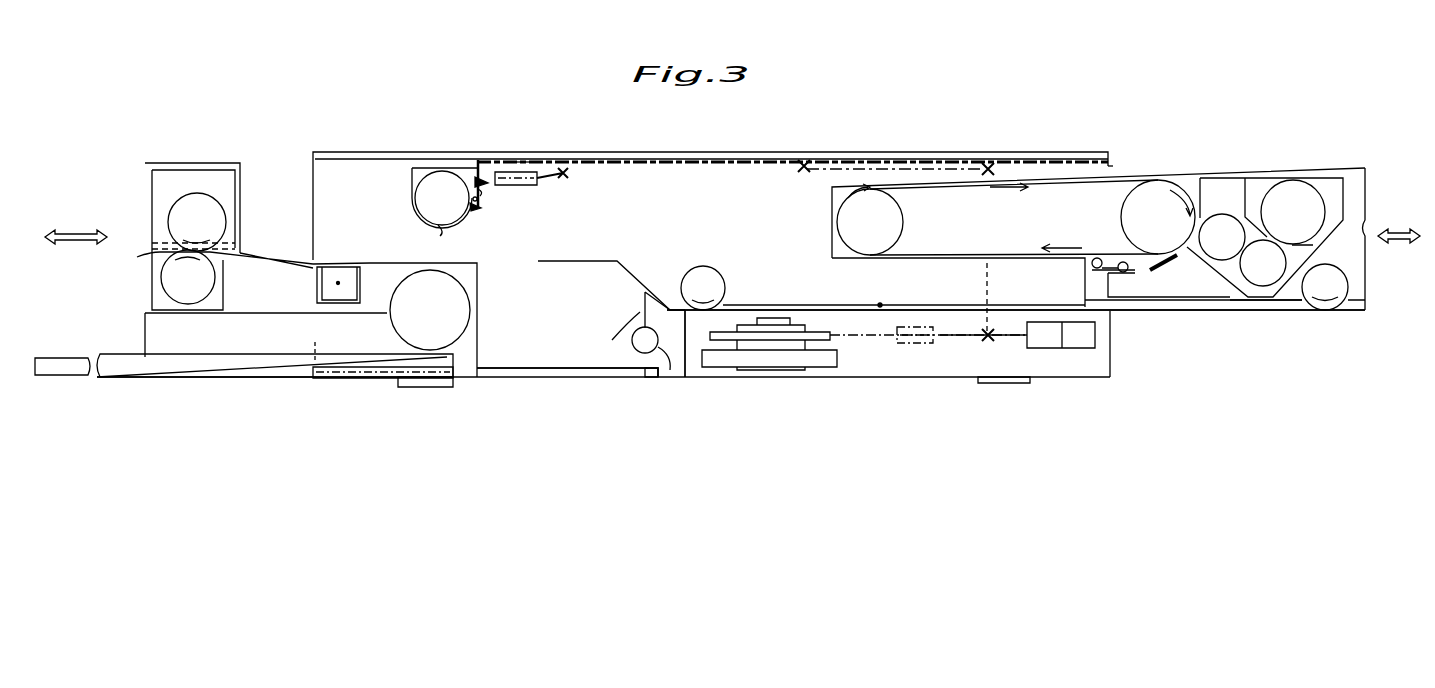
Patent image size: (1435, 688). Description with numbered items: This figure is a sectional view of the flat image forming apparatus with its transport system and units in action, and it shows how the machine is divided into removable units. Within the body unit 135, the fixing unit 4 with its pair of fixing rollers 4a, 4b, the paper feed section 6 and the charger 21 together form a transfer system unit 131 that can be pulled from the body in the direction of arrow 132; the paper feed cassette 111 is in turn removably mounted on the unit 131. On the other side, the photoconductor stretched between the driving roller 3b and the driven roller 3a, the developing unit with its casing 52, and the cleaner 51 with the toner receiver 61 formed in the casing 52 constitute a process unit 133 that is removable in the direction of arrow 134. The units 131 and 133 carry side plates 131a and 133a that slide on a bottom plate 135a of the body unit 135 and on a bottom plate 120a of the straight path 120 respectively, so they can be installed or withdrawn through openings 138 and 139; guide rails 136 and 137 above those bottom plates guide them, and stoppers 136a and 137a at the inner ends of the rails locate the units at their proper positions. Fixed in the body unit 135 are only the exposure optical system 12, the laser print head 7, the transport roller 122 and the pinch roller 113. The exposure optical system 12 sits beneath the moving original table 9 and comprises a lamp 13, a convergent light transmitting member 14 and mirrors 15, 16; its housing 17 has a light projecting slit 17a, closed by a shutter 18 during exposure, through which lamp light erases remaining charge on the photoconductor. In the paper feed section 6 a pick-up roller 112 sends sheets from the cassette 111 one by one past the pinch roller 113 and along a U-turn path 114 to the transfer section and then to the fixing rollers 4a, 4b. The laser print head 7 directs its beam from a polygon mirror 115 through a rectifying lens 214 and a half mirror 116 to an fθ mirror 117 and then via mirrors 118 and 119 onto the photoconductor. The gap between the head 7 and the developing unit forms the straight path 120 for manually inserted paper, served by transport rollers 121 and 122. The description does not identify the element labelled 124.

The driven roller 3a is at (893, 258).
The driving roller 3b is at (1153, 195).
The fixing unit 4 is at (234, 243).
The fixing roller 4a is at (215, 223).
The fixing roller 4b is at (203, 278).
The paper feed section 6 is at (372, 340).
The laser print head 7 is at (855, 377).
The original table 9 is at (857, 150).
The exposure optical system 12 is at (508, 170).
The lamp 13 is at (415, 180).
The convergent light transmitting member 14 is at (522, 172).
The mirror 15 is at (470, 158).
The mirror 16 is at (573, 162).
The housing 17 is at (438, 228).
The light projecting slit 17a is at (478, 197).
The shutter 18 is at (475, 200).
The charger 21 is at (362, 282).
The cleaner 51 is at (1168, 262).
The casing 52 is at (1107, 280).
The toner receiver 61 is at (1163, 300).
The paper feed cassette 111 is at (123, 377).
The pick-up roller 112 is at (452, 335).
The pinch roller 113 is at (668, 375).
The U-turn path 114 is at (630, 350).
The polygon mirror 115 is at (820, 368).
The half mirror 116 is at (985, 340).
The fθ mirror 117 is at (1052, 348).
The mirror 118 is at (993, 160).
The mirror 119 is at (801, 158).
The straight path 120 is at (928, 305).
The bottom plate 120a is at (882, 310).
The transport roller 121 is at (1338, 312).
The transport roller 122 is at (707, 268).
The paper guide 124 is at (160, 258).
The transfer system unit 131 is at (163, 160).
The side plate 131a is at (477, 272).
The arrow 132 is at (75, 250).
The process unit 133 is at (1212, 165).
The side plate 133a is at (1230, 310).
The arrow 134 is at (1397, 246).
The body unit 135 is at (312, 186).
The bottom plate 135a is at (537, 377).
The guide rail 136 is at (555, 368).
The stopper 136a is at (642, 377).
The guide rail 137 is at (792, 310).
The stopper 137a is at (735, 305).
The opening 138 is at (300, 375).
The opening 139 is at (1113, 163).
The rectifying lens 214 is at (930, 345).